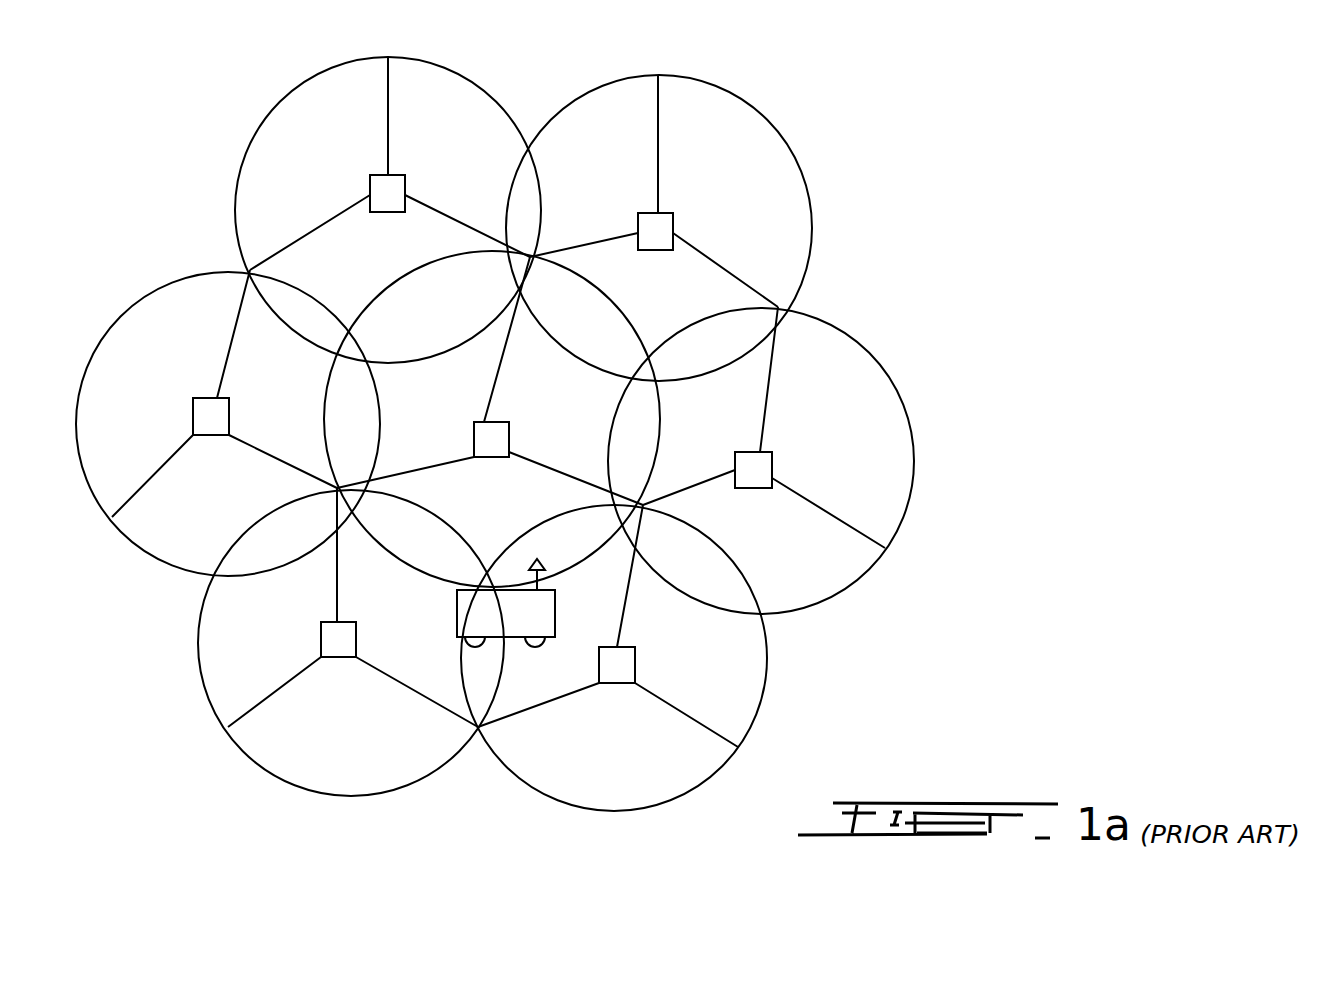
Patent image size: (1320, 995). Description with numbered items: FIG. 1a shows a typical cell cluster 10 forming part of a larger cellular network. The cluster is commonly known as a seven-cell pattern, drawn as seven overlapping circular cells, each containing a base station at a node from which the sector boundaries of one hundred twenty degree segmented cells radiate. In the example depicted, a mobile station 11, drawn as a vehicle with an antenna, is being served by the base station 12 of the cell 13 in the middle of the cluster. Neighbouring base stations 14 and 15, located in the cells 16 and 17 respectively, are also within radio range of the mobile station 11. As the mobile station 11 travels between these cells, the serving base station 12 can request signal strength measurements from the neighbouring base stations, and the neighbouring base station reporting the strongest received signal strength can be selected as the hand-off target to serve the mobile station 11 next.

The cell cluster 10 is at (812, 222).
The mobile station 11 is at (555, 620).
The base station 12 is at (484, 420).
The cell 13 is at (452, 421).
The base station 14 is at (340, 622).
The base station 15 is at (618, 647).
The cell 16 is at (357, 758).
The cell 17 is at (634, 768).